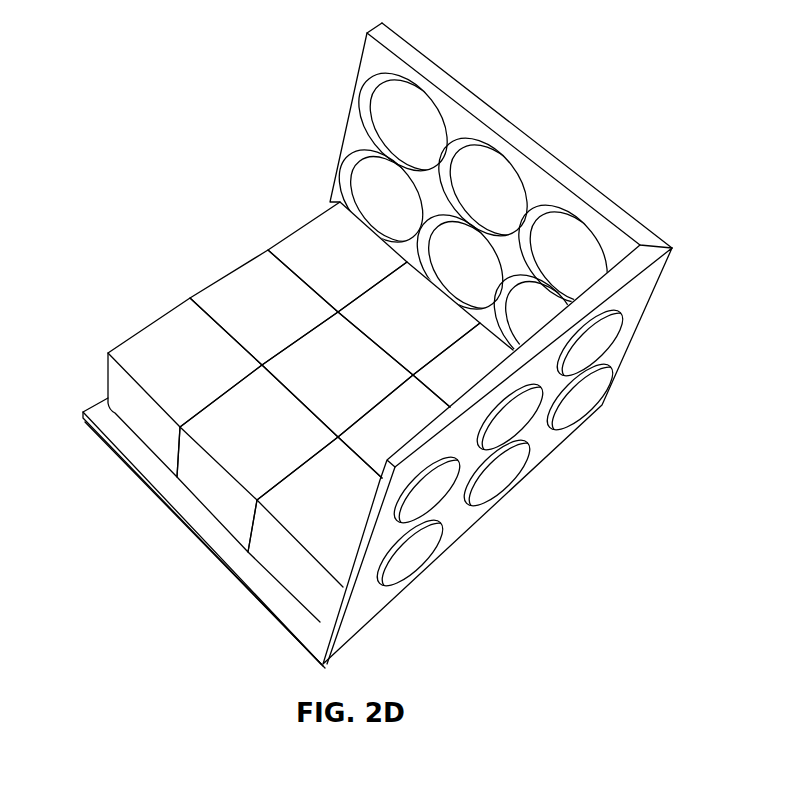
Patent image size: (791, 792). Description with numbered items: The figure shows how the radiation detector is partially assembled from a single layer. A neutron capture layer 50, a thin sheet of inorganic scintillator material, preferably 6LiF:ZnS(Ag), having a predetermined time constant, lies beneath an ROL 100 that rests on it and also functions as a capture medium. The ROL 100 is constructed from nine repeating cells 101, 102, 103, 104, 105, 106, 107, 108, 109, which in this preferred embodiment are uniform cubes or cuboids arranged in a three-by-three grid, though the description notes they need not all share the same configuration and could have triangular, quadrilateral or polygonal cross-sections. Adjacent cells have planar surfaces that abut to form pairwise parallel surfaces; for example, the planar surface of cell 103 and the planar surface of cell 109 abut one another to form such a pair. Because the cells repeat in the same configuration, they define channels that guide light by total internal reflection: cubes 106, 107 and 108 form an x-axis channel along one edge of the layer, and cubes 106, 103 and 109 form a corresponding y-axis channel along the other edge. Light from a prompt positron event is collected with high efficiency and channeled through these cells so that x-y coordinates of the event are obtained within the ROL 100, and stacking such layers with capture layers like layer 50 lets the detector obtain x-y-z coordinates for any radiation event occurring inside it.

The ROL 100 is at (140, 286).
The neutron capture layer 50 is at (265, 575).
The repeating cell 101 is at (394, 426).
The repeating cell 102 is at (463, 365).
The repeating cell 103 is at (257, 458).
The repeating cell 104 is at (337, 374).
The repeating cell 105 is at (409, 318).
The repeating cell 106 is at (185, 387).
The repeating cell 107 is at (264, 307).
The repeating cell 108 is at (337, 257).
The repeating cell 109 is at (315, 529).